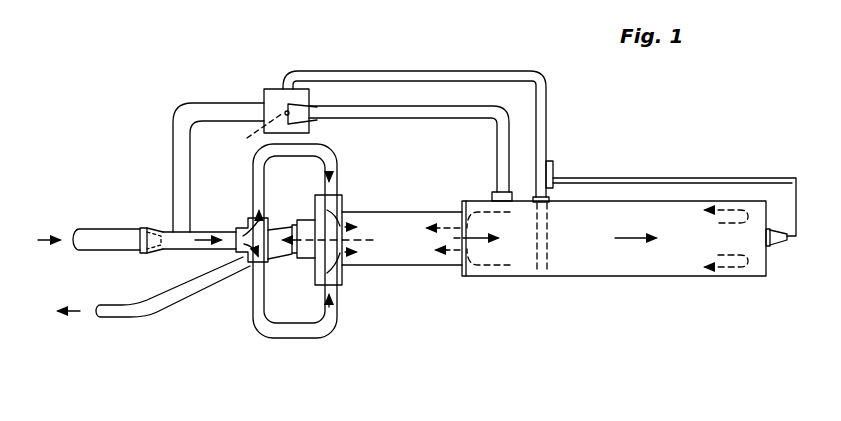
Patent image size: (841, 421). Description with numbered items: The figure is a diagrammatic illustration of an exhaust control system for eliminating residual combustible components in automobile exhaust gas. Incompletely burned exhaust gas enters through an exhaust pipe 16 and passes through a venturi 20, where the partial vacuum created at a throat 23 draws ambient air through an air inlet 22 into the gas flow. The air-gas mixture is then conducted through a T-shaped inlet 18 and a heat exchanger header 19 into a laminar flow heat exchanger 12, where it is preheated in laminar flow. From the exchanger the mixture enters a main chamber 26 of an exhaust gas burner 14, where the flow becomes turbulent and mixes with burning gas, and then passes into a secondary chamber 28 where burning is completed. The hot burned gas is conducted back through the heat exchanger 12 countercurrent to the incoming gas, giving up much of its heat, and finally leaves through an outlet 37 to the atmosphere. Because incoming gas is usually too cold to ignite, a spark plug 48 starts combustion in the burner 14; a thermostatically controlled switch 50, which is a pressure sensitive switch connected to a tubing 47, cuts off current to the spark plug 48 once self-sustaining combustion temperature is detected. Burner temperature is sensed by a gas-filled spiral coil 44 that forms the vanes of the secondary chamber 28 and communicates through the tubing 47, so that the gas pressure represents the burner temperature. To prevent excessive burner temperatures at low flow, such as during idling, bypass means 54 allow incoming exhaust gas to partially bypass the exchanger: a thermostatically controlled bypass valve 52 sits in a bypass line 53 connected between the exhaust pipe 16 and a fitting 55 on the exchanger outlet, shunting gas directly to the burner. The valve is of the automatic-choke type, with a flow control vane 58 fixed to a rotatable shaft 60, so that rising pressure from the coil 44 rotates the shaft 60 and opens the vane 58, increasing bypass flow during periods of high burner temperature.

The laminar flow heat exchanger 12 is at (402, 196).
The exhaust gas burner 14 is at (649, 172).
The exhaust pipe 16 is at (93, 254).
The T-shaped inlet 18 is at (248, 227).
The heat exchanger header 19 is at (313, 208).
The venturi 20 is at (142, 228).
The air inlet 22 is at (149, 252).
The venturi throat 23 is at (151, 227).
The main chamber 26 is at (680, 262).
The secondary chamber 28 is at (522, 262).
The outlet 37 is at (148, 317).
The spiral coil 44 is at (543, 277).
The tubing 47 is at (416, 72).
The spark plug 48 is at (782, 245).
The thermostatically controlled switch 50 is at (553, 166).
The bypass valve 52 is at (270, 89).
The bypass line 53 is at (438, 106).
The bypass valve means 54 is at (306, 64).
The fitting 55 is at (493, 192).
The flow control vane 58 is at (250, 136).
The shaft 60 is at (308, 109).